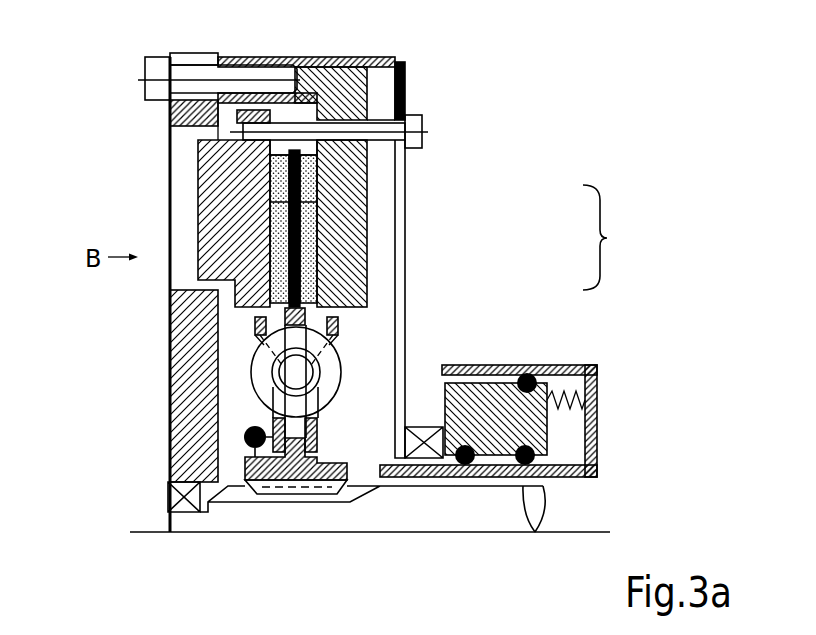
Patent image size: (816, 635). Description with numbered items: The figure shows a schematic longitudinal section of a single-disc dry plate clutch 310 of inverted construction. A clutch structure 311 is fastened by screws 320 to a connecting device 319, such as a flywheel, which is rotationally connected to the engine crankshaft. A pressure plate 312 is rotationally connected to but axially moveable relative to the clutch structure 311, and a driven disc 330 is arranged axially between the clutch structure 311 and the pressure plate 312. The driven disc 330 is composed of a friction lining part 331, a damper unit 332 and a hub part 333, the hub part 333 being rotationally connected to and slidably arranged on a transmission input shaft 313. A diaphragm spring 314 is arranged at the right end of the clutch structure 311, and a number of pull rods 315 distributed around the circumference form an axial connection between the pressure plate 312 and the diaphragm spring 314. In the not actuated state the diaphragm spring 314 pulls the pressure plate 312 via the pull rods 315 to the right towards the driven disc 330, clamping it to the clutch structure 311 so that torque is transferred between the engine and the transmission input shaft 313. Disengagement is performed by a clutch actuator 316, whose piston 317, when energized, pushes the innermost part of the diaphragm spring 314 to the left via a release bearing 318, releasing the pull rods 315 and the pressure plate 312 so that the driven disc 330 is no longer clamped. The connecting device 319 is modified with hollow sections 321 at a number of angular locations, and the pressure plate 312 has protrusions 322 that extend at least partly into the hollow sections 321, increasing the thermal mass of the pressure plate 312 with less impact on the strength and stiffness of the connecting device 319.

The clutch 310 is at (619, 86).
The clutch structure 311 is at (343, 90).
The pressure plate 312 is at (317, 200).
The transmission input shaft 313 is at (505, 517).
The diaphragm spring 314 is at (400, 170).
The pull rods 315 is at (382, 135).
The clutch actuator 316 is at (617, 346).
The piston 317 is at (547, 427).
The release bearing 318 is at (413, 443).
The connecting device 319 is at (175, 107).
The screws 320 is at (158, 72).
The hollow sections 321 is at (185, 173).
The protrusions 322 is at (197, 218).
The driven disc 330 is at (617, 237).
The friction lining part 331 is at (303, 230).
The damper unit 332 is at (338, 338).
The hub part 333 is at (315, 462).